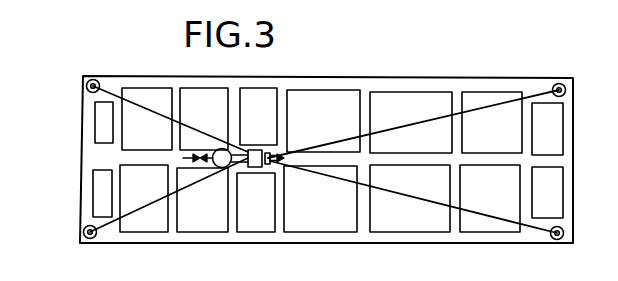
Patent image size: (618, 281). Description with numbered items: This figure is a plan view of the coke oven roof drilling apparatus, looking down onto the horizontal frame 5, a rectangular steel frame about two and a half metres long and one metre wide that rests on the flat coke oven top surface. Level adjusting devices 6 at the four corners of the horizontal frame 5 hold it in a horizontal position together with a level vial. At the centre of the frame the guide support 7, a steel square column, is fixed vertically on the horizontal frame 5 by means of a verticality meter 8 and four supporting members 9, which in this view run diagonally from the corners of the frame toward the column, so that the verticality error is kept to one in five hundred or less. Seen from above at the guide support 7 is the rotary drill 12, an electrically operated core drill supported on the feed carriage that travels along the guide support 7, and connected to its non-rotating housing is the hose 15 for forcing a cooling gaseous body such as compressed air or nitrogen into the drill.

The horizontal frame 5 is at (442, 78).
The level adjusting devices 6 is at (95, 76).
The guide support 7 is at (255, 150).
The verticality meter 8 is at (275, 167).
The supporting members 9 is at (148, 112).
The rotary drill 12 is at (218, 168).
The hose 15 is at (183, 158).